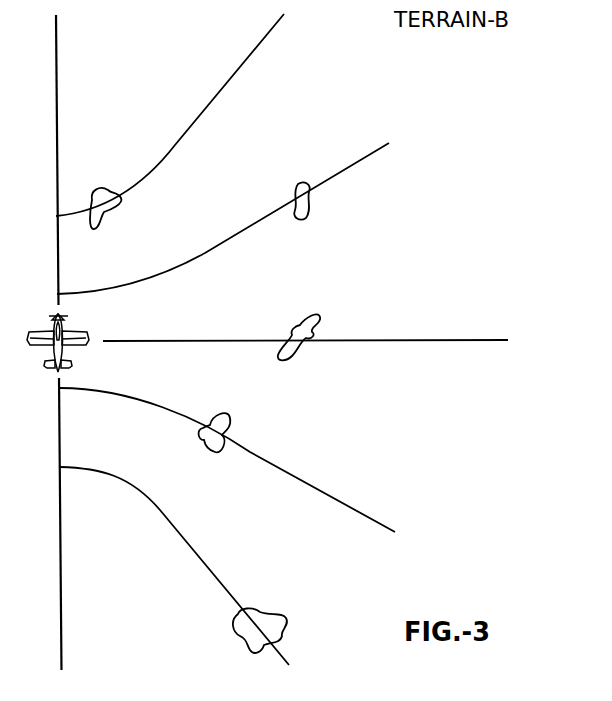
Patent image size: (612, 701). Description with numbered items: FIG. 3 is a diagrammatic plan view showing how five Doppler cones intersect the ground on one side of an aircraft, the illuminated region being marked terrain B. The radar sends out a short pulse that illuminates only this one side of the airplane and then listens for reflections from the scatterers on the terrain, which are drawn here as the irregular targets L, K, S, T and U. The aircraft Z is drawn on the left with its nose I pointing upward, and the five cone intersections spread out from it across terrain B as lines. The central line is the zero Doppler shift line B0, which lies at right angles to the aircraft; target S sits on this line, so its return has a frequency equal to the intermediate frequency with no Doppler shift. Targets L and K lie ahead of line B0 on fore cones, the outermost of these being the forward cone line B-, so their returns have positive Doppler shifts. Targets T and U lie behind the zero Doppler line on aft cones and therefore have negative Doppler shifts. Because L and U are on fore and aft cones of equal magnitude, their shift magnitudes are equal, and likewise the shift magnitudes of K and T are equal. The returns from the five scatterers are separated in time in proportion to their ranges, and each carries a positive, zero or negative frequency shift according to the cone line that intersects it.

The forward Doppler cone intersection line B- is at (185, 108).
The terrain B is at (232, 212).
The zero Doppler shift line B0 is at (323, 341).
The scatterer L is at (115, 208).
The scatterer K is at (313, 205).
The scatterer S is at (300, 342).
The scatterer T is at (215, 448).
The scatterer U is at (270, 625).
The aircraft Z is at (54, 345).
The aircraft nose / heading indicator I is at (44, 330).